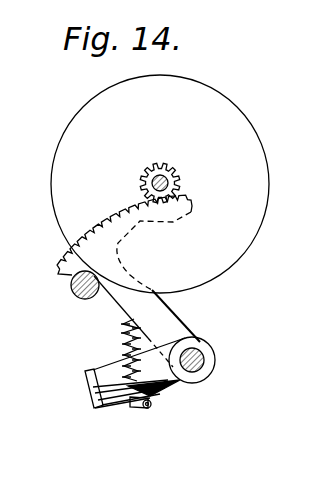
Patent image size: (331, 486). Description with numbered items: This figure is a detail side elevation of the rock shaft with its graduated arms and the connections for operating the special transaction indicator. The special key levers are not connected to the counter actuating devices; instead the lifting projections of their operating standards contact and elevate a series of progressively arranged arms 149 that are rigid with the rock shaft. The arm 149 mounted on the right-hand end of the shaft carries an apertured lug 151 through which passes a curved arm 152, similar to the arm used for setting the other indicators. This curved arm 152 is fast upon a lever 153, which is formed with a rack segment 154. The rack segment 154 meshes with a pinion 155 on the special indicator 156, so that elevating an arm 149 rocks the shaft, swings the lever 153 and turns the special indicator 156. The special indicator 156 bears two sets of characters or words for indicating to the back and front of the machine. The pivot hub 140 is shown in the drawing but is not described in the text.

The pulley hub 140 is at (204, 358).
The progressively arranged arms 149 is at (88, 394).
The apertured lug 151 is at (136, 404).
The curved arm 152 is at (125, 334).
The lever 153 is at (168, 313).
The rack segment 154 is at (118, 199).
The pinion 155 is at (180, 177).
The special indicator 156 is at (152, 117).